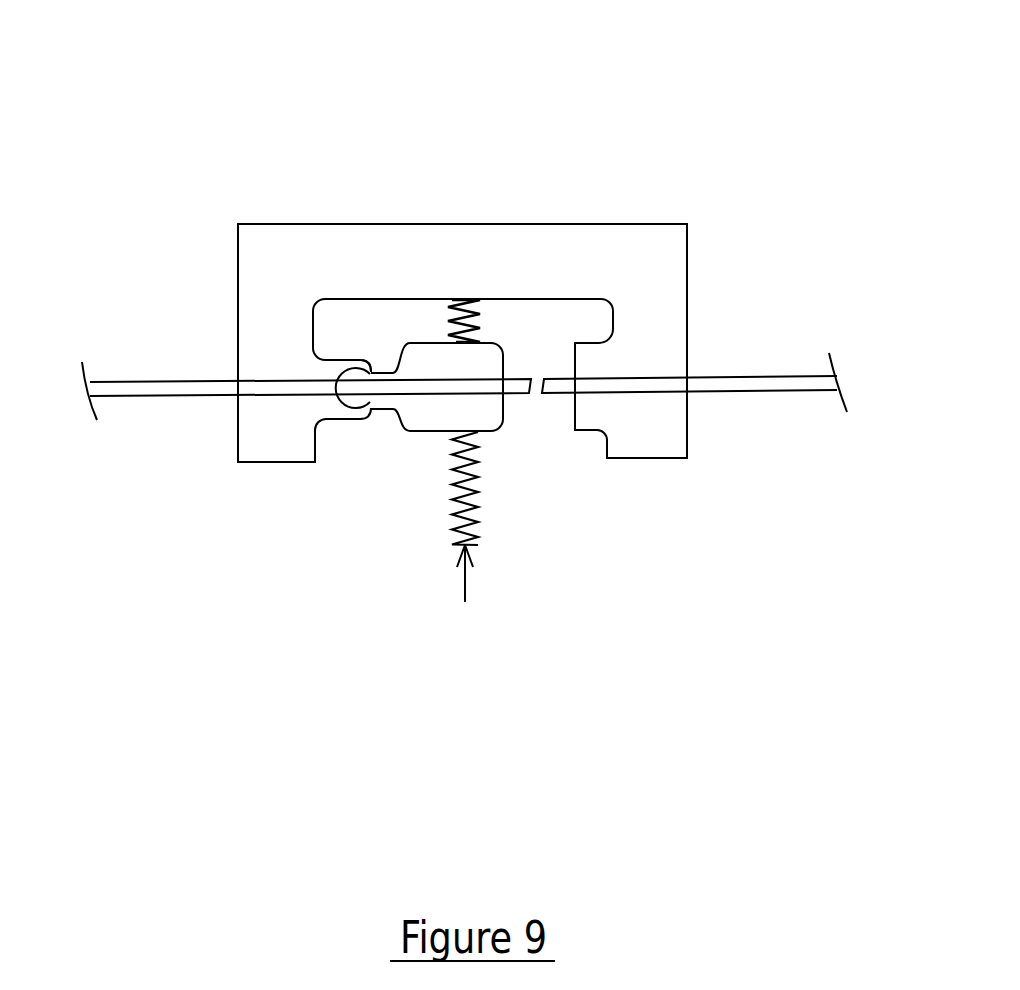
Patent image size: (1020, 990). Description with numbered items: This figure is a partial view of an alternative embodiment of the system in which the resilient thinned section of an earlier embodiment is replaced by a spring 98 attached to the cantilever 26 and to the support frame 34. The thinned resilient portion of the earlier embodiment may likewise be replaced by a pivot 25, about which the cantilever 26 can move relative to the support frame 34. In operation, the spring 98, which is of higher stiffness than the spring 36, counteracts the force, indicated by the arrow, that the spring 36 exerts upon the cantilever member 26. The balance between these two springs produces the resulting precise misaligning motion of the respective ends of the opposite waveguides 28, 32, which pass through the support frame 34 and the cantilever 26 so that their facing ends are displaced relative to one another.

The pivot 25 is at (358, 358).
The cantilever 26 is at (437, 420).
The waveguide 28 is at (165, 378).
The waveguide 32 is at (755, 375).
The support frame 34 is at (690, 277).
The spring 36 is at (477, 492).
The spring 98 is at (480, 315).